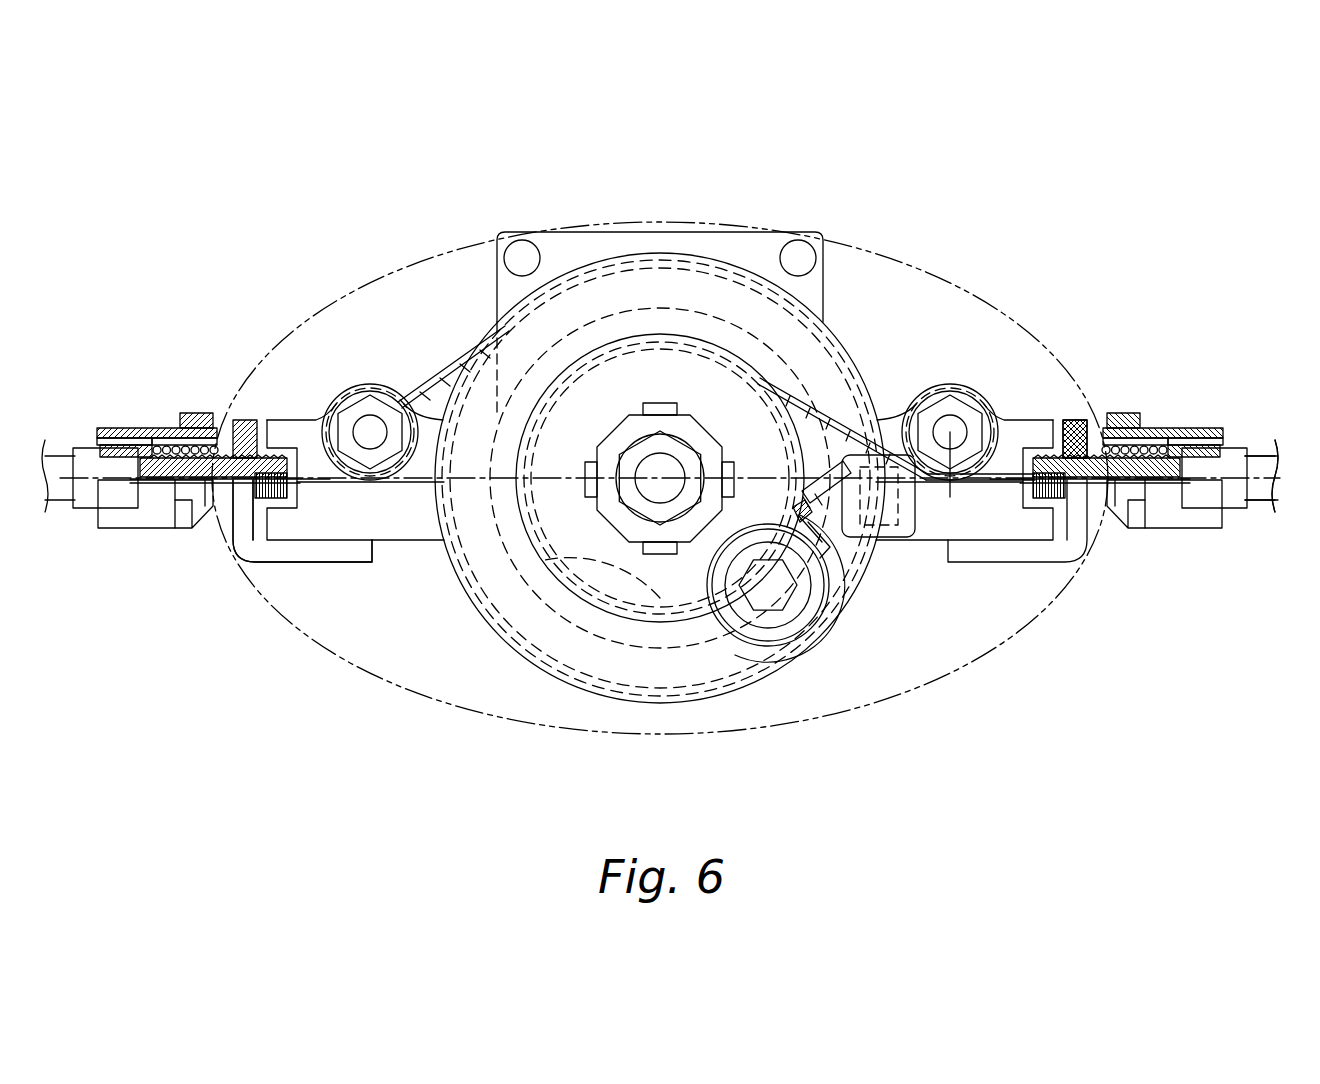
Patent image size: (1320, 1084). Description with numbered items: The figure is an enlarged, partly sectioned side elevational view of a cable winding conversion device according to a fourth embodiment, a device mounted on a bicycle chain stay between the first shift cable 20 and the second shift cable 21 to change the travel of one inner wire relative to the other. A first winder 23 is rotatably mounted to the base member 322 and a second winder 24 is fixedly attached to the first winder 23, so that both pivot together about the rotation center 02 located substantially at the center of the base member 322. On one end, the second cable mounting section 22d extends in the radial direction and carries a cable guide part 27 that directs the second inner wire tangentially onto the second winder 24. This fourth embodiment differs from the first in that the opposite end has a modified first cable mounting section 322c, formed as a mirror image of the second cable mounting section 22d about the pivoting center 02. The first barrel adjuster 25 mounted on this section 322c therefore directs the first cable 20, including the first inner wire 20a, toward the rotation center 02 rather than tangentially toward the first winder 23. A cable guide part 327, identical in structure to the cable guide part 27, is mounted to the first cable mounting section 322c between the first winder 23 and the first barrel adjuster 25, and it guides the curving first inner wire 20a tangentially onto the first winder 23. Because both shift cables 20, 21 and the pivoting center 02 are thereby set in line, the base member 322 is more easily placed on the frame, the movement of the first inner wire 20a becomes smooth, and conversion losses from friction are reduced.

The rotation center 02 is at (662, 476).
The first shift cable 20 is at (1262, 452).
The first inner wire 20a is at (845, 432).
The second shift cable 21 is at (60, 448).
The second cable mounting section 22d is at (302, 527).
The first winder 23 is at (663, 583).
The second winder 24 is at (613, 670).
The first barrel adjuster 25 is at (1145, 445).
The cable guide part 27 is at (380, 395).
The base member 322 is at (410, 543).
The first cable mounting section 322c is at (1027, 432).
The cable guide part 327 is at (977, 420).